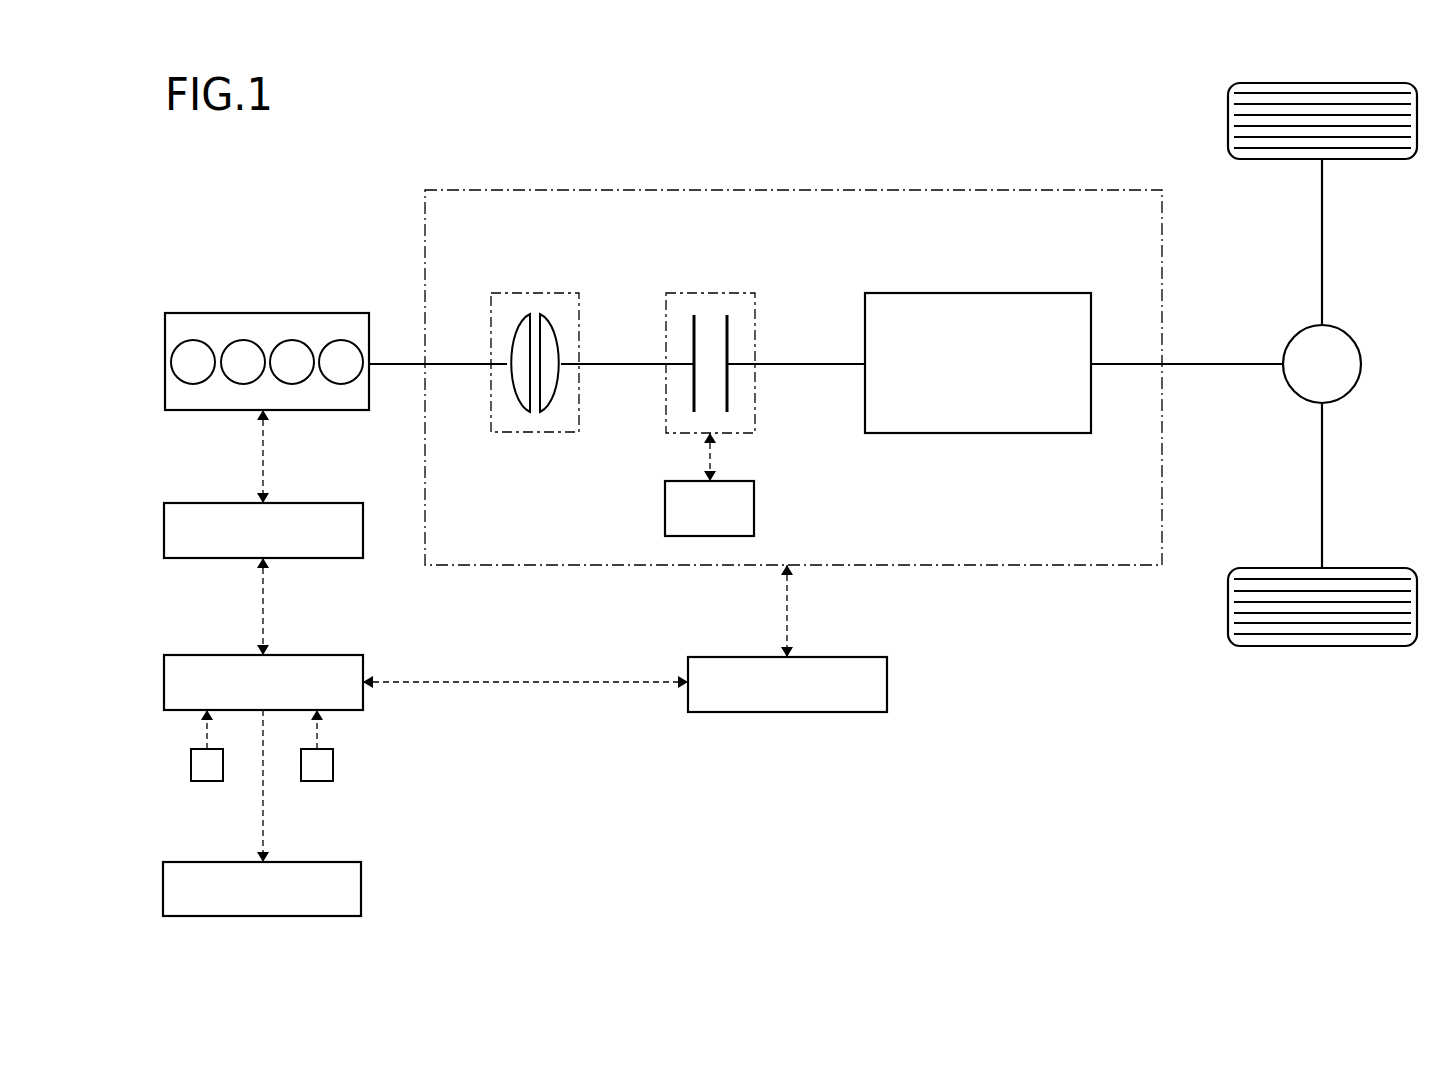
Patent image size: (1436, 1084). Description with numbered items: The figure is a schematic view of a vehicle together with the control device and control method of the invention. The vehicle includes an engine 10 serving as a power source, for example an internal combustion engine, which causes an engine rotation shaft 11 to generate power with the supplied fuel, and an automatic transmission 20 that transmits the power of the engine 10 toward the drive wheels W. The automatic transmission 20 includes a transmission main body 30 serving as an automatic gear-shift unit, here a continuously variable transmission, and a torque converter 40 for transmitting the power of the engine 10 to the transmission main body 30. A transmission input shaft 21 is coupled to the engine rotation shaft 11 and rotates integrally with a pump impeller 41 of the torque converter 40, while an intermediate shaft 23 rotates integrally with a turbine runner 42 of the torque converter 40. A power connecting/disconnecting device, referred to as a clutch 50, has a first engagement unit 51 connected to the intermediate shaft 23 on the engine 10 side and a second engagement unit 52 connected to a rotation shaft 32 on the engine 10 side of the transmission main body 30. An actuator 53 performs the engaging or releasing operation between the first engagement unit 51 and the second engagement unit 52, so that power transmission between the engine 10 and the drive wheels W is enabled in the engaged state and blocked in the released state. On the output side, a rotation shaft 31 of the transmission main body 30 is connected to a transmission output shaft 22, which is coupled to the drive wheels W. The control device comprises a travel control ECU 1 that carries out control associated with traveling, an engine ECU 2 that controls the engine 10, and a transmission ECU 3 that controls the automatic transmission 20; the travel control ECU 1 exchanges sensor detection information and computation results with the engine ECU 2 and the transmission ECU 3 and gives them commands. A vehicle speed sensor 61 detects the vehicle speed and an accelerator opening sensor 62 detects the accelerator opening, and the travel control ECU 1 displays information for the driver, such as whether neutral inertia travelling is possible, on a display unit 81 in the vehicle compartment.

The travel control ECU 1 is at (337, 655).
The engine ECU 2 is at (338, 503).
The transmission ECU 3 is at (860, 657).
The engine 10 is at (312, 313).
The engine rotation shaft 11 is at (392, 363).
The automatic transmission 20 is at (1075, 190).
The transmission input shaft 21 is at (460, 363).
The transmission output shaft 22 is at (1192, 363).
The intermediate shaft 23 is at (620, 363).
The transmission main body 30 is at (1030, 293).
The rotation shaft 31 is at (1121, 363).
The rotation shaft 32 is at (834, 363).
The torque converter 40 is at (534, 356).
The pump impeller 41 is at (510, 410).
The turbine runner 42 is at (556, 410).
The clutch 50 is at (710, 333).
The first engagement unit 51 is at (692, 388).
The second engagement unit 52 is at (729, 388).
The actuator 53 is at (754, 494).
The vehicle speed sensor 61 is at (205, 782).
The accelerator opening sensor 62 is at (315, 782).
The display unit 81 is at (361, 872).
The drive wheels W is at (1380, 160).